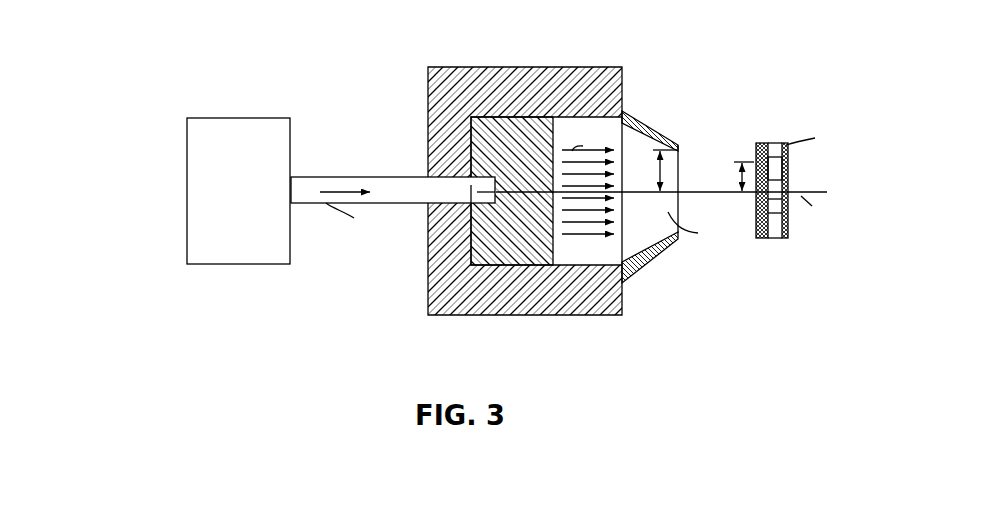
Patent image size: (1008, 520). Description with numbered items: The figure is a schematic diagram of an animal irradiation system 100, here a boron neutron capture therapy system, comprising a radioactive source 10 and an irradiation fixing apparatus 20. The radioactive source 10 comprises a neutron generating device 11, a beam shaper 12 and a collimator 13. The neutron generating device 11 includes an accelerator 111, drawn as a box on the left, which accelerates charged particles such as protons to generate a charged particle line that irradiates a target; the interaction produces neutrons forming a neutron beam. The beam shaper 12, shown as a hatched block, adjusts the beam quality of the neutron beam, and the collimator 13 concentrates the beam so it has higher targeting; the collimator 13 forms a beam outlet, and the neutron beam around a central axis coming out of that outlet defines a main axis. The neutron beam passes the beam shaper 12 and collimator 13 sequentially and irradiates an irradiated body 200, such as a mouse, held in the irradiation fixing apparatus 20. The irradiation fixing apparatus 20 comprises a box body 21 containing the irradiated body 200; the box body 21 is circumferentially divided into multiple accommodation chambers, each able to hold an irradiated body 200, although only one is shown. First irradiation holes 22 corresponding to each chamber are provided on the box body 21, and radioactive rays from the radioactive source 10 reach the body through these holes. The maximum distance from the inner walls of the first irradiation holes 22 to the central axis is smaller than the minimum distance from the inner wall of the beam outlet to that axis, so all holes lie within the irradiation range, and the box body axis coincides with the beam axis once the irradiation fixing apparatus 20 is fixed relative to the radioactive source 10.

The animal irradiation system 100 is at (152, 43).
The radioactive source 10 is at (364, 329).
The neutron generating device 11 is at (392, 170).
The accelerator 111 is at (290, 253).
The beam shaper 12 is at (528, 67).
The collimator 13 is at (652, 257).
The irradiation fixing apparatus 20 is at (778, 128).
The box body 21 is at (787, 239).
The first irradiation holes 22 is at (757, 220).
The irradiated body 200 is at (786, 161).